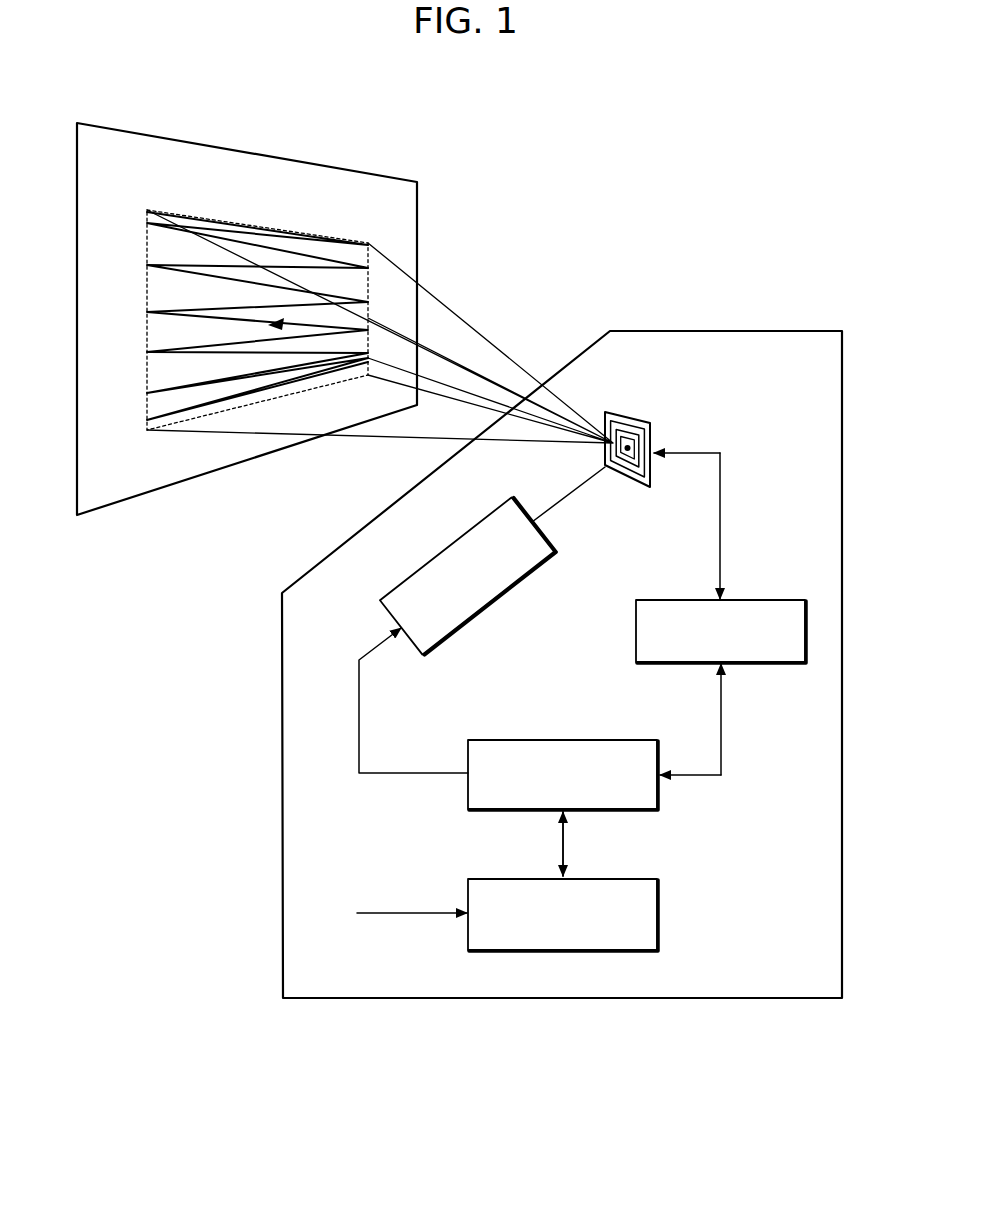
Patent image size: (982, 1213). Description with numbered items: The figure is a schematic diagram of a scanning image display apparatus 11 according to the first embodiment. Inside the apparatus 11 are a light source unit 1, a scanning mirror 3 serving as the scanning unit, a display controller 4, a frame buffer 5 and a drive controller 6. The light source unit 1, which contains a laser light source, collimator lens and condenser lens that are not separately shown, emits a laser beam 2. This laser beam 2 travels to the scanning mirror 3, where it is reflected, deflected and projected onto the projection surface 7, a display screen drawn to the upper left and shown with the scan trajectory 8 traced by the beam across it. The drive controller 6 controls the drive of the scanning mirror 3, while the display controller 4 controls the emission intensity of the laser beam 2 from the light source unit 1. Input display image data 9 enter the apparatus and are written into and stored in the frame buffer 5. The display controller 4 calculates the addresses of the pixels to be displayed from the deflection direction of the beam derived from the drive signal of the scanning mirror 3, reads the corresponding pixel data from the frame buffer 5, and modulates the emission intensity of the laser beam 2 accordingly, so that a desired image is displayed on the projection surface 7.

The light source unit 1 is at (430, 562).
The laser beam 2 is at (550, 505).
The scanning mirror 3 is at (627, 414).
The display controller 4 is at (622, 740).
The frame buffer 5 is at (622, 879).
The drive controller 6 is at (763, 600).
The projection surface 7 is at (356, 170).
The scan trajectory 8 is at (278, 263).
The input display image data 9 is at (403, 913).
The scanning image display apparatus 11 is at (671, 331).